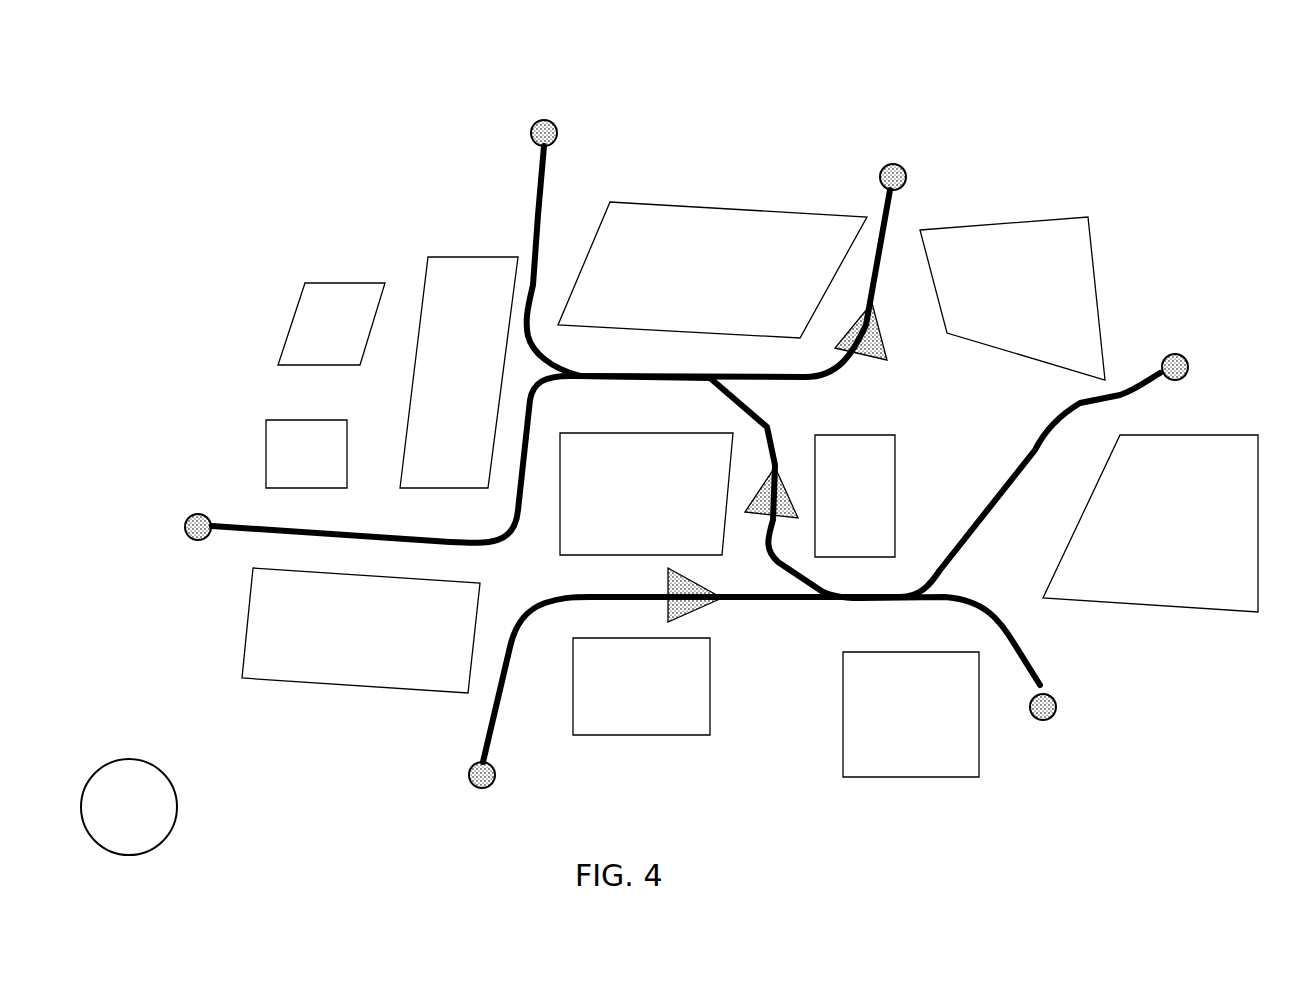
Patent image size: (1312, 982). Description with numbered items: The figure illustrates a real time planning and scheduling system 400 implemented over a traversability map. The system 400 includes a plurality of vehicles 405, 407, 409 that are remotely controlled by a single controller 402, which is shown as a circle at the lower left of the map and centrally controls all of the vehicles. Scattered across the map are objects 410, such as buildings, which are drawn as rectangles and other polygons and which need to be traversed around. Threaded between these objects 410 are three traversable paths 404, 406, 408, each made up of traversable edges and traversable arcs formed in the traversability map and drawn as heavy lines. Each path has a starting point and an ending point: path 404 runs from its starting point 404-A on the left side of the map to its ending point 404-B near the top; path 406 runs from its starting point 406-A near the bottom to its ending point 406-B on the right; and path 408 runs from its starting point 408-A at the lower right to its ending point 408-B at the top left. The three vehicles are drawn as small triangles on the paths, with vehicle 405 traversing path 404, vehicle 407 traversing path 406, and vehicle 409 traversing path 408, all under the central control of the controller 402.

The real time planning and scheduling system 400 is at (1067, 108).
The controller 402 is at (112, 817).
The traversable path 404 is at (493, 541).
The starting point 404-A is at (198, 513).
The ending point 404-B is at (905, 168).
The vehicle 405 is at (888, 330).
The traversable path 406 is at (792, 600).
The starting point 406-A is at (478, 787).
The ending point 406-B is at (1183, 358).
The vehicle 407 is at (697, 597).
The traversable path 408 is at (1013, 623).
The starting point 408-A is at (1057, 715).
The ending point 408-B is at (548, 125).
The vehicle 409 is at (775, 483).
The objects 410 is at (319, 328).